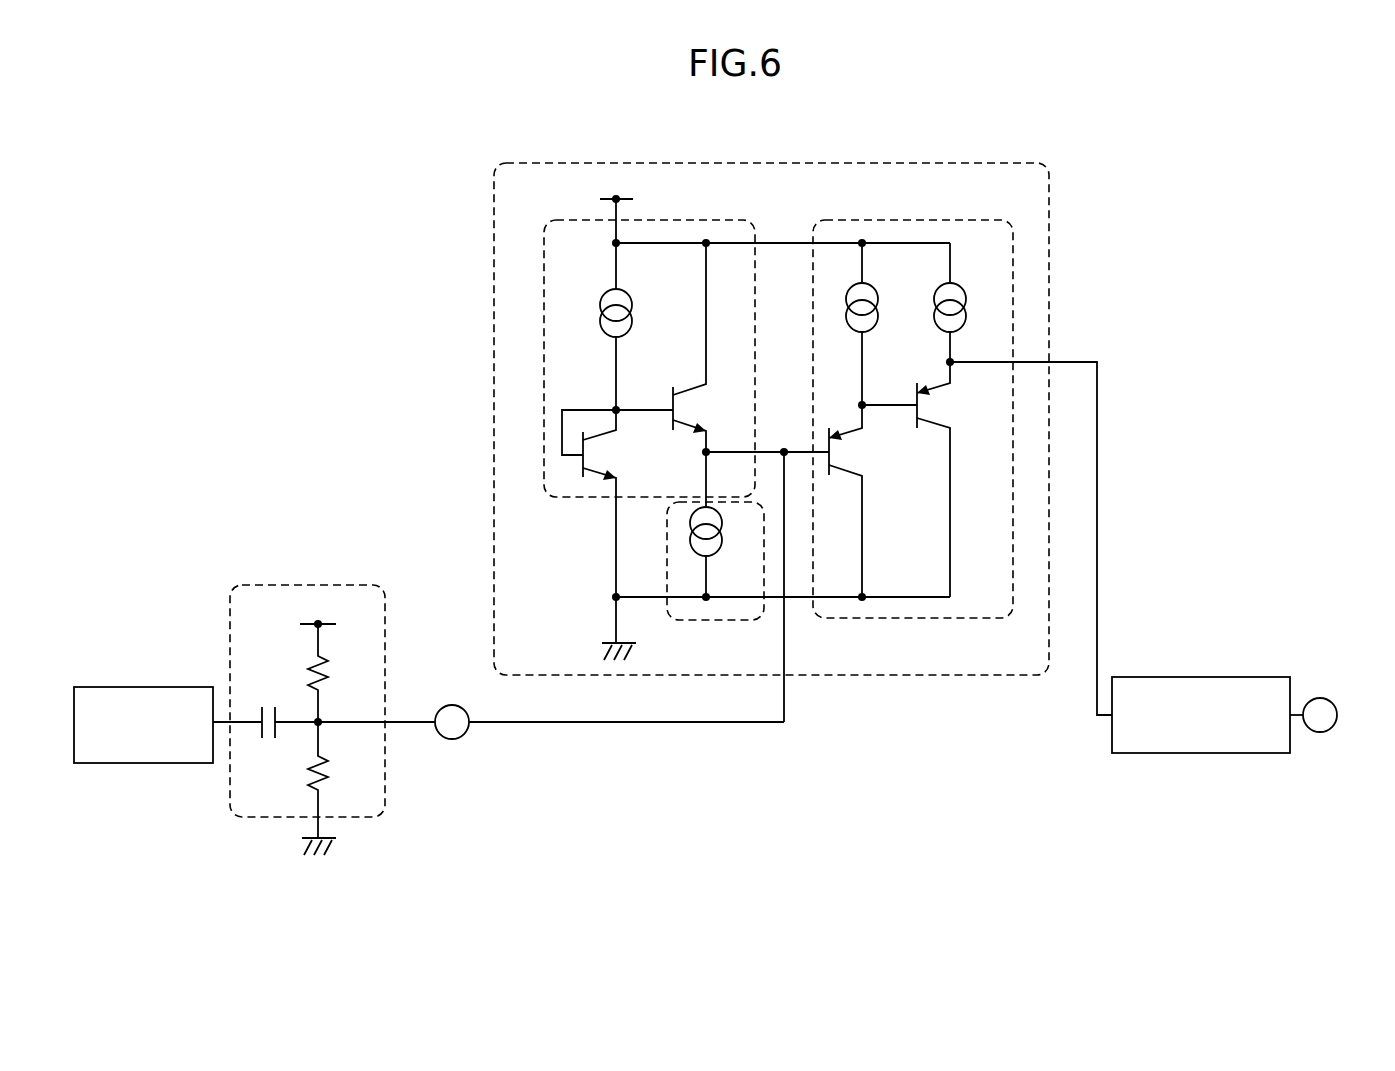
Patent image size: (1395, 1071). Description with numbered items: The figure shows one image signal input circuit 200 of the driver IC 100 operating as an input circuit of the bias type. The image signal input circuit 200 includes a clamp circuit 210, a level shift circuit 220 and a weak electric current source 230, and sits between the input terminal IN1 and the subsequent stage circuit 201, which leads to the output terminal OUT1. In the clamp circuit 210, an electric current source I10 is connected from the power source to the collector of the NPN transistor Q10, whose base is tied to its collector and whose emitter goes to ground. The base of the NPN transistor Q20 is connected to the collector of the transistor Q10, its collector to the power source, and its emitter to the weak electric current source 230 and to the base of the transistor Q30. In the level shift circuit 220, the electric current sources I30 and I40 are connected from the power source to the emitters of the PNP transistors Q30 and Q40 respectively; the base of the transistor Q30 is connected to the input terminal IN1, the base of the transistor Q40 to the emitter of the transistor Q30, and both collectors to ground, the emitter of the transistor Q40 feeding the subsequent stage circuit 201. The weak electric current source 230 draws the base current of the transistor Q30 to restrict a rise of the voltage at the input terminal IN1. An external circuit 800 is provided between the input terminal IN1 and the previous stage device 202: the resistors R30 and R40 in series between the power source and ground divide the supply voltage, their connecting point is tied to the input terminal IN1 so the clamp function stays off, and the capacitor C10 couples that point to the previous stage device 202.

The driver IC 100 is at (1117, 122).
The image signal input circuit 200 is at (984, 156).
The clamp circuit 210 is at (684, 216).
The level shift circuit 220 is at (943, 216).
The weak electric current source 230 is at (727, 620).
The external circuit 800 is at (305, 582).
The previous stage device 202 is at (128, 687).
The subsequent stage circuit 201 is at (1200, 677).
The transistor Q10 is at (610, 501).
The transistor Q20 is at (682, 347).
The transistor Q30 is at (844, 499).
The transistor Q40 is at (927, 477).
The electric current source I10 is at (635, 326).
The electric current source I30 is at (880, 324).
The electric current source I40 is at (968, 302).
The resistor R30 is at (340, 672).
The resistor R40 is at (340, 772).
The capacitor C10 is at (265, 708).
The input terminal IN1 is at (551, 714).
The output terminal OUT1 is at (1337, 705).